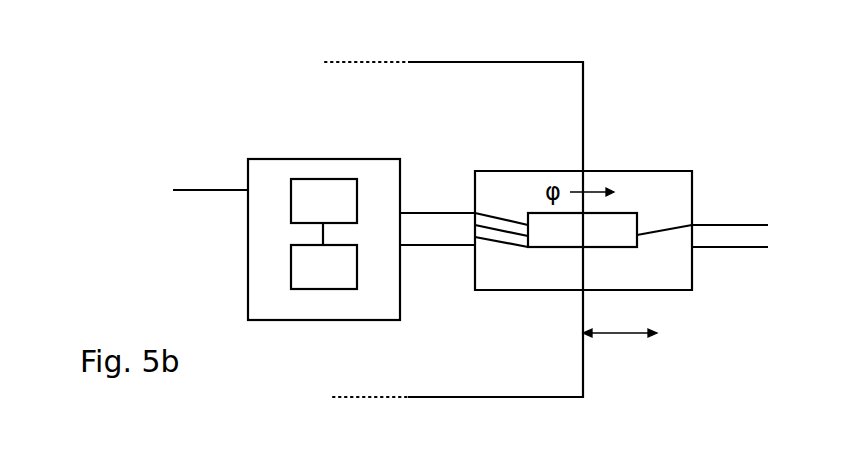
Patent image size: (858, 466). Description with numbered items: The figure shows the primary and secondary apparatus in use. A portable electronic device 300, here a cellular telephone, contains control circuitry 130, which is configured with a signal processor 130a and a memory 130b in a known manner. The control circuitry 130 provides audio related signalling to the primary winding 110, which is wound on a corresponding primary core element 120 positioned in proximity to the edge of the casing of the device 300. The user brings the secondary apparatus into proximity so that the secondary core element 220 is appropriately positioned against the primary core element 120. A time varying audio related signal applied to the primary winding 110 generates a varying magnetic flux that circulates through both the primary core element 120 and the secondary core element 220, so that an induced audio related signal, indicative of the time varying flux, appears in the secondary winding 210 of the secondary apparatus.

The primary winding 110 is at (518, 213).
The primary core element 120 is at (508, 267).
The control circuitry 130 is at (324, 213).
The signal processor 130a is at (324, 201).
The memory 130b is at (324, 267).
The secondary winding 210 is at (658, 225).
The secondary core element 220 is at (668, 268).
The portable electronic device 300 is at (475, 73).